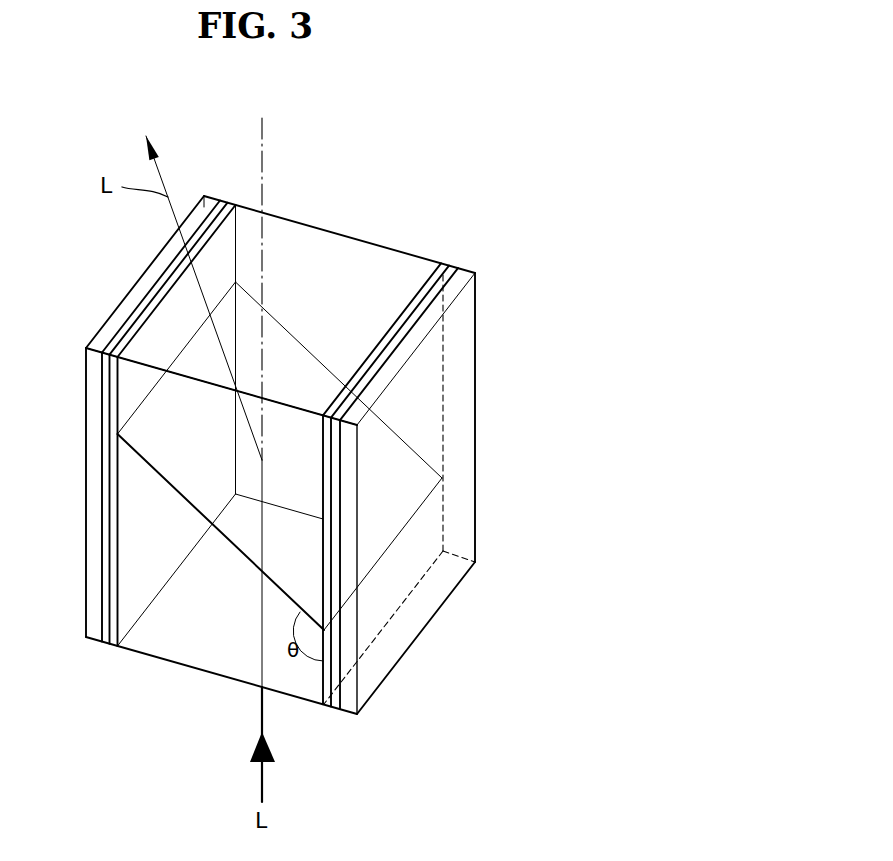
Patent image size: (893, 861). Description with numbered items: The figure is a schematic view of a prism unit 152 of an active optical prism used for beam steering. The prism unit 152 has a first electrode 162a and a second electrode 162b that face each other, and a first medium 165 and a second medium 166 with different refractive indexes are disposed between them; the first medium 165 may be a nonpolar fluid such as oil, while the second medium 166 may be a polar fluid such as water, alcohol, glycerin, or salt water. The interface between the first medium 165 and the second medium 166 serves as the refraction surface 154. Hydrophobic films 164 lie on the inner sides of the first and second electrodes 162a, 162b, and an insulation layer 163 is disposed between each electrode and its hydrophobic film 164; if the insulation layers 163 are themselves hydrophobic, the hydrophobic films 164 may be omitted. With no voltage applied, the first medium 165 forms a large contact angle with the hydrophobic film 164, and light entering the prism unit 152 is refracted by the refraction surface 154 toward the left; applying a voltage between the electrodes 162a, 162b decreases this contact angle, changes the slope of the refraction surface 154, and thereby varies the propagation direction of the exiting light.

The prism unit 152 is at (487, 465).
The refraction surface 154 is at (220, 532).
The first electrode 162a is at (130, 296).
The second electrode 162b is at (468, 270).
The insulation layer 163 is at (130, 322).
The hydrophobic film 164 is at (123, 343).
The first medium 165 is at (225, 642).
The second medium 166 is at (298, 492).